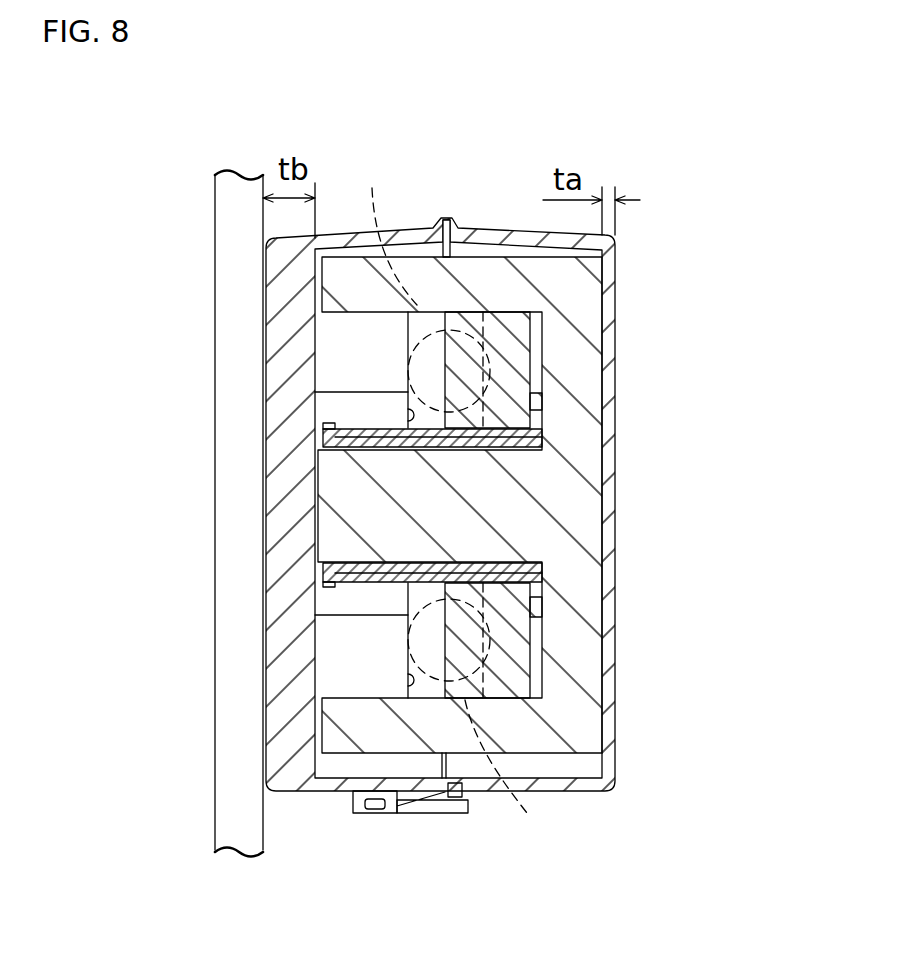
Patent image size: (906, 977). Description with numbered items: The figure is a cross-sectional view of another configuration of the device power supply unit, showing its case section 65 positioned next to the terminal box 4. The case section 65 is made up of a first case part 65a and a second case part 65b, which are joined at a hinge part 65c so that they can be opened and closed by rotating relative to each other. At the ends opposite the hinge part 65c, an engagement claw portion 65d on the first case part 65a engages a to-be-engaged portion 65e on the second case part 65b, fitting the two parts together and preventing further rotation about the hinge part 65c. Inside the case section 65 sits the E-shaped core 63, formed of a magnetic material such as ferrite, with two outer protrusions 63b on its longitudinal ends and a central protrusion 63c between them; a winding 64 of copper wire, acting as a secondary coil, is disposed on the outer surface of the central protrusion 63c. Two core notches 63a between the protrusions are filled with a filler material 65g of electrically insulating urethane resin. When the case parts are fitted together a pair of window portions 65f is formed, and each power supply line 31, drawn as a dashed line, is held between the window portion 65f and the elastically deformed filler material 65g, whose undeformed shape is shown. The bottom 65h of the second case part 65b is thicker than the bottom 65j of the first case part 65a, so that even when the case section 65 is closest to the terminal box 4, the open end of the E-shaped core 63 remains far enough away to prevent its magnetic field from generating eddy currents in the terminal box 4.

The terminal box 4 is at (235, 229).
The power supply line 31 is at (448, 503).
The E-shaped core 63 is at (417, 514).
The core notch 63a is at (363, 317).
The outer protrusion 63b is at (465, 270).
The central protrusion 63c is at (345, 488).
The winding 64 is at (490, 428).
The case section 65 is at (431, 519).
The first case part 65a is at (572, 797).
The second case part 65b is at (318, 797).
The hinge part 65c is at (446, 217).
The engagement claw portion 65d is at (378, 813).
The to-be-engaged portion 65e is at (393, 806).
The window portion 65f is at (408, 422).
The filler material 65g is at (520, 357).
The bottom of second case part 65h is at (285, 322).
The bottom of first case part 65j is at (607, 560).